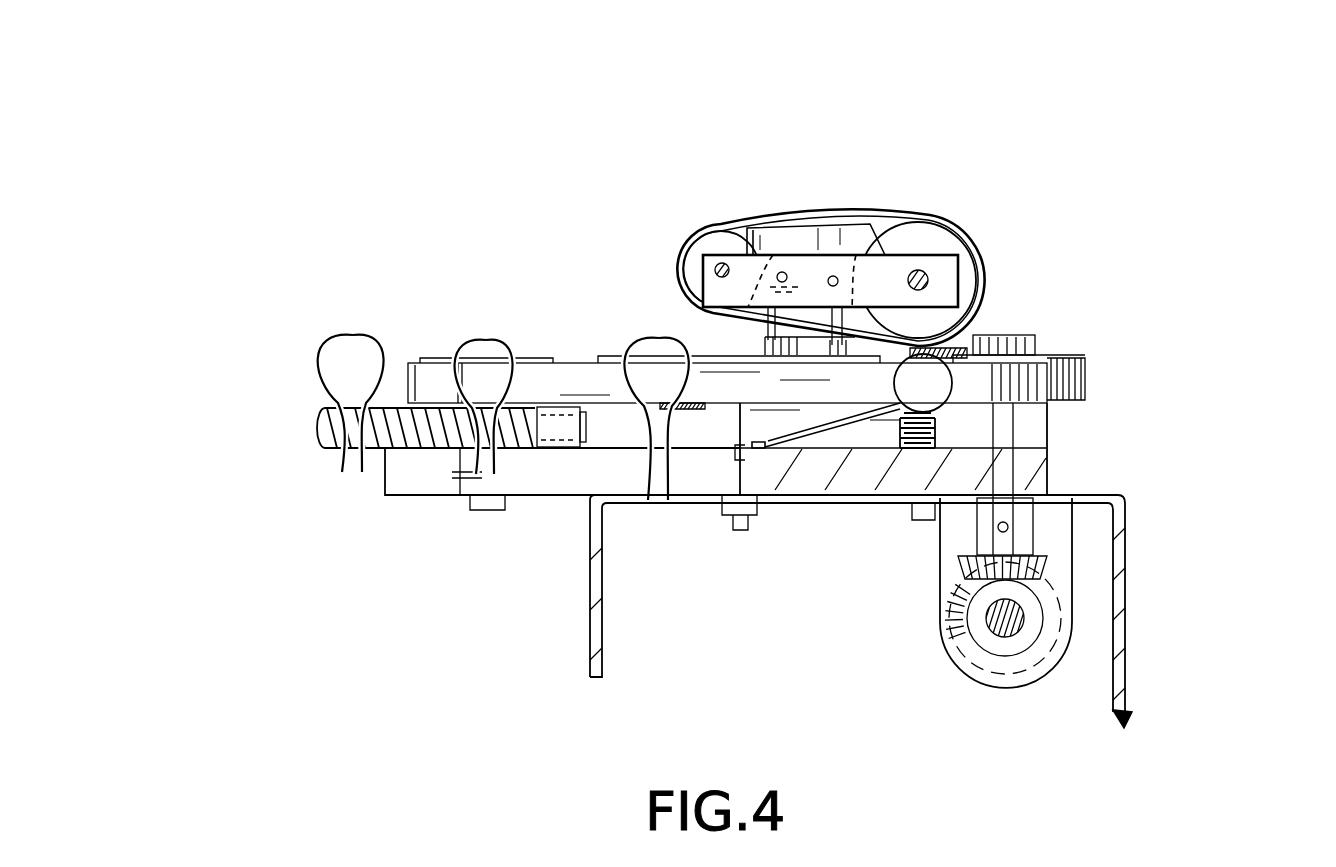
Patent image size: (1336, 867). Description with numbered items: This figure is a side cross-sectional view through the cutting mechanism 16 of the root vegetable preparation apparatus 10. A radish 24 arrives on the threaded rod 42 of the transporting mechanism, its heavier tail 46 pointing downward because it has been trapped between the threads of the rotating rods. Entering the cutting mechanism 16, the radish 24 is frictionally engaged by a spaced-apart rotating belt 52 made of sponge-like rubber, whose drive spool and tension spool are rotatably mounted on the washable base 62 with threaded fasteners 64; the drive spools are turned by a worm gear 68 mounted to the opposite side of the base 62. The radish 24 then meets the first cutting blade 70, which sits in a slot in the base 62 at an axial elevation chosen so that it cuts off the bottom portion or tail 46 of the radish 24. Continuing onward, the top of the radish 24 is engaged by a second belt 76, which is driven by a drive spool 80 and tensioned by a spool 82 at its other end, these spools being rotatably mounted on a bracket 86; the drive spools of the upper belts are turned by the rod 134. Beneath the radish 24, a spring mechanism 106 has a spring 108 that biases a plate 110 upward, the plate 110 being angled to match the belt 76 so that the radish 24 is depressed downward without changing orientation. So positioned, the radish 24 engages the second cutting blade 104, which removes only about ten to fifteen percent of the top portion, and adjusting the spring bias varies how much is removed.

The apparatus 10 is at (254, 124).
The cutting mechanism 16 is at (1212, 186).
The radish 24 is at (356, 355).
The threaded rod 42 is at (322, 410).
The tail 46 is at (358, 455).
The belt 52 is at (560, 382).
The base 62 is at (418, 470).
The threaded fasteners 64 is at (1037, 340).
The worm gear 68 is at (1020, 527).
The first cutting blade 70 is at (700, 410).
The belt 76 is at (742, 232).
The drive spool 80 is at (928, 235).
The spool 82 is at (705, 240).
The bracket 86 is at (810, 240).
The second cutting blade 104 is at (960, 352).
The spring mechanism 106 is at (978, 426).
The spring 108 is at (908, 452).
The plate 110 is at (823, 447).
The rod 134 is at (930, 277).